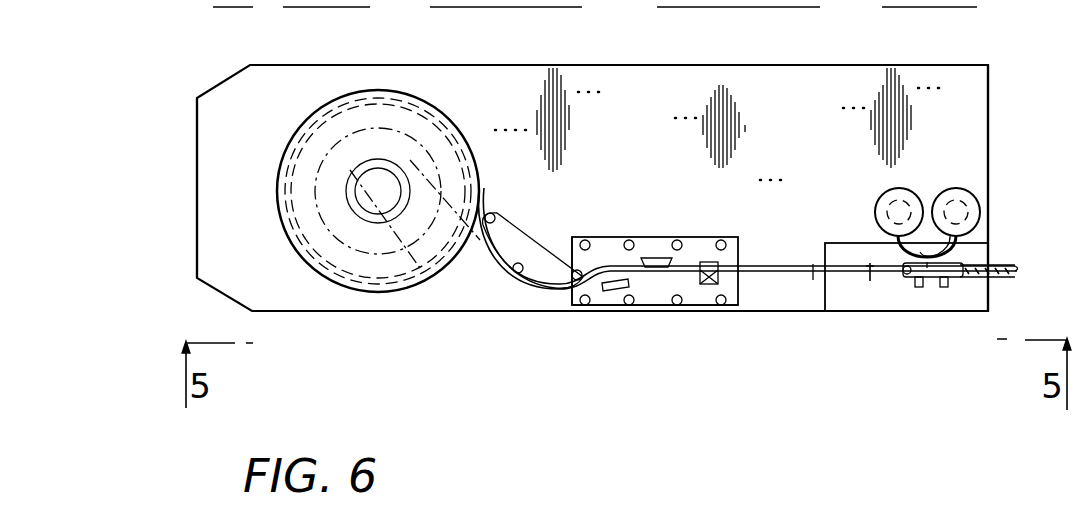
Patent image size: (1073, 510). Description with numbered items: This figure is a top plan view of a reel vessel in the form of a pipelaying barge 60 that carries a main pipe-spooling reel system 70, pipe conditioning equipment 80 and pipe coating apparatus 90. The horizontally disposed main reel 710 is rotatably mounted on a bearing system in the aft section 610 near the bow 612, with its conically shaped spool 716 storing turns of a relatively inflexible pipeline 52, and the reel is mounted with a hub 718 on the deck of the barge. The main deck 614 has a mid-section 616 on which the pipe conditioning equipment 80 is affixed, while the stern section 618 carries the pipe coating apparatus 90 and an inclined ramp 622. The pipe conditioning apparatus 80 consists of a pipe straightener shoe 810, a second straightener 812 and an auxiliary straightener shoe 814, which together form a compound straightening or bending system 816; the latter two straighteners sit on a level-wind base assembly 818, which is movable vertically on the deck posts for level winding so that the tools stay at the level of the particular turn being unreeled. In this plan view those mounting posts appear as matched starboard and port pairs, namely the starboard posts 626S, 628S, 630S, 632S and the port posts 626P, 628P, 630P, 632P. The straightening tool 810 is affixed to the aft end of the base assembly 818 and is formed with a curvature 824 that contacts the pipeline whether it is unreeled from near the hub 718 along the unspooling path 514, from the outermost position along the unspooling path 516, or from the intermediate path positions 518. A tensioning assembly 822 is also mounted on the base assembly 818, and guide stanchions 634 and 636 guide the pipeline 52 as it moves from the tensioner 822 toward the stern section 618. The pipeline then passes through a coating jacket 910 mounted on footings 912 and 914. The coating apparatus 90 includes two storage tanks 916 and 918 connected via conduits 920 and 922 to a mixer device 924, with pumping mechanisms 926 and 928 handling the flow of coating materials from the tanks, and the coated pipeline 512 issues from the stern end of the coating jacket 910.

The pipelaying barge 60 is at (522, 60).
The bow 612 is at (196, 190).
The aft section 610 is at (410, 278).
The stern section 618 is at (977, 75).
The mid-section 616 is at (735, 68).
The inclined ramp 622 is at (905, 3).
The main deck 614 is at (717, 124).
The main reel 710 is at (430, 92).
The conically shaped spool 716 is at (345, 130).
The main pipe-spooling reel system 70 is at (383, 118).
The unspooling path 516 is at (455, 130).
The intermediate path positions 518 is at (427, 140).
The hub 718 is at (378, 191).
The unspooling path 514 is at (418, 262).
The pipe straightener shoe 810 is at (532, 236).
The curvature 824 is at (484, 248).
The pipeline 52 is at (747, 306).
The pipe conditioning equipment 80 is at (636, 176).
The compound straightening or bending system 816 is at (568, 226).
The starboard deck post 626S is at (586, 239).
The starboard deck post 628S is at (630, 239).
The starboard deck post 630S is at (679, 239).
The starboard deck post 632S is at (723, 239).
The port deck post 626P is at (582, 306).
The port deck post 628P is at (630, 306).
The port deck post 630P is at (678, 306).
The port deck post 632P is at (722, 306).
The level-wind base assembly 818 is at (696, 306).
The auxiliary straightener shoe 814 is at (668, 258).
The tensioning assembly 822 is at (720, 262).
The second straightener 812 is at (612, 306).
The guide stanchion 634 is at (813, 266).
The guide stanchion 636 is at (868, 273).
The storage tank 916 is at (890, 190).
The pumping mechanism 926 is at (918, 202).
The storage tank 918 is at (975, 200).
The pumping mechanism 928 is at (980, 215).
The conduit 920 is at (902, 253).
The conduit 922 is at (966, 250).
The coating jacket 910 is at (932, 310).
The mixer device 924 is at (905, 310).
The footing 912 is at (924, 310).
The footing 914 is at (955, 310).
The coated pipeline 512 is at (1010, 272).
The pipe coating apparatus 90 is at (945, 156).